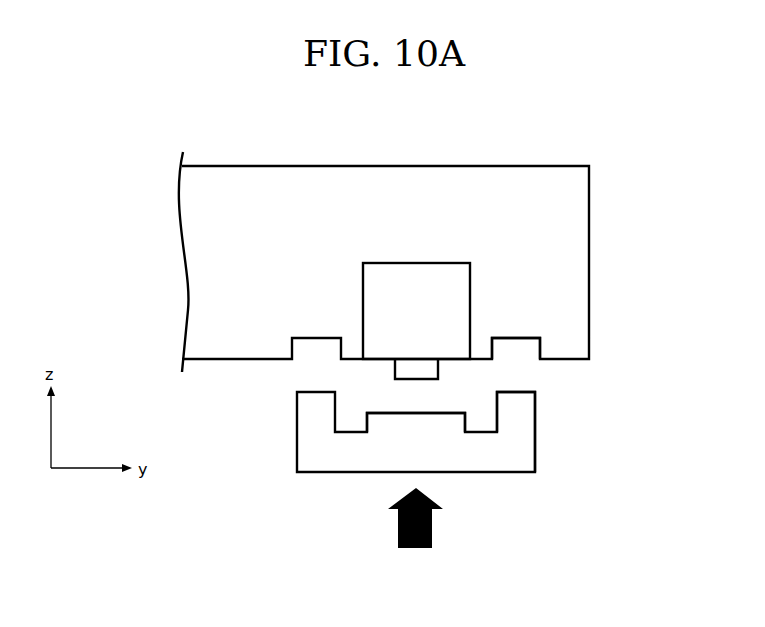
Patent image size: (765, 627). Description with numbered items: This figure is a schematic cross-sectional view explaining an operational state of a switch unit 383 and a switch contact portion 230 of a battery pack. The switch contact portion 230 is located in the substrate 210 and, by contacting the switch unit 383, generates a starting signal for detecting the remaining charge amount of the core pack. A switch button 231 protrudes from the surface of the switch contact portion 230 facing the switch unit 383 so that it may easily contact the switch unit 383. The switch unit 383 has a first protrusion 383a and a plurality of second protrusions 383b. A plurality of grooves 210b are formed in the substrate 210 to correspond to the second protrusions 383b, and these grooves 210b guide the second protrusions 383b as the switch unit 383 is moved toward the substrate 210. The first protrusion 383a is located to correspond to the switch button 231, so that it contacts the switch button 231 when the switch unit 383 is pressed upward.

The substrate 210 is at (583, 290).
The grooves 210b is at (553, 347).
The switch contact portion 230 is at (467, 277).
The switch button 231 is at (408, 369).
The switch unit 383 is at (545, 479).
The first protrusion 383a is at (446, 419).
The second protrusions 383b is at (526, 402).